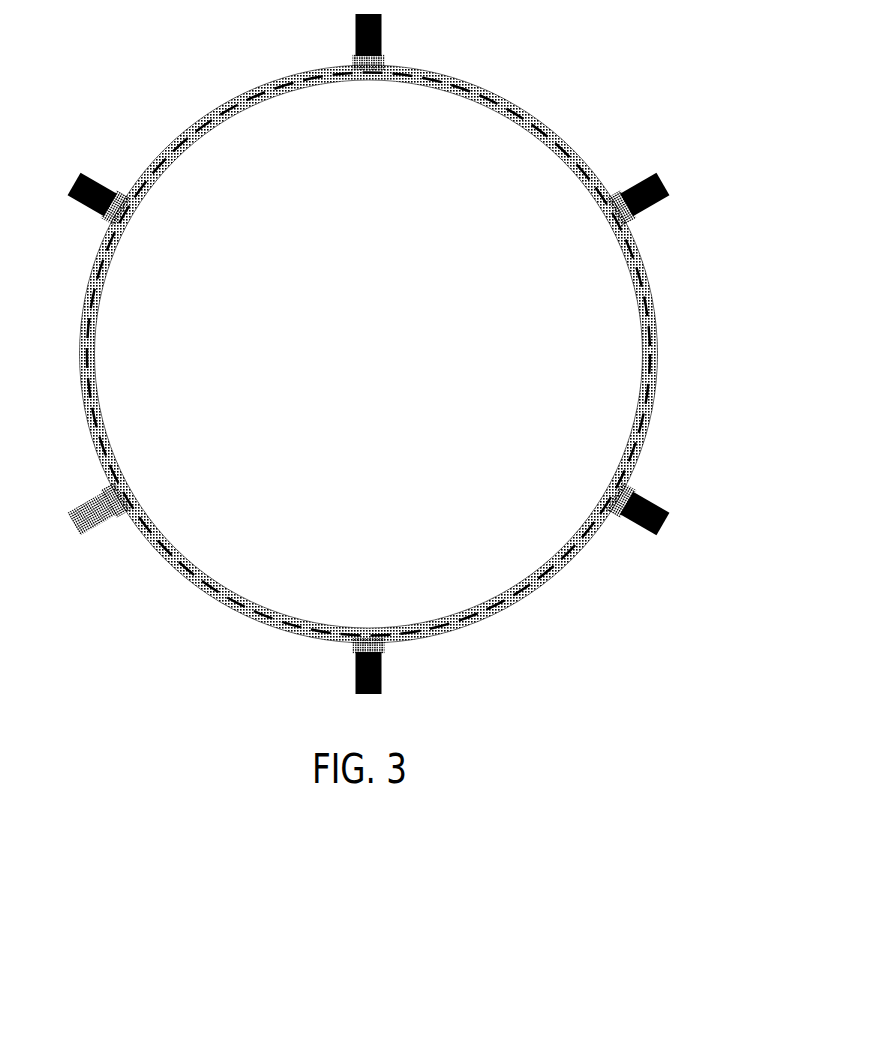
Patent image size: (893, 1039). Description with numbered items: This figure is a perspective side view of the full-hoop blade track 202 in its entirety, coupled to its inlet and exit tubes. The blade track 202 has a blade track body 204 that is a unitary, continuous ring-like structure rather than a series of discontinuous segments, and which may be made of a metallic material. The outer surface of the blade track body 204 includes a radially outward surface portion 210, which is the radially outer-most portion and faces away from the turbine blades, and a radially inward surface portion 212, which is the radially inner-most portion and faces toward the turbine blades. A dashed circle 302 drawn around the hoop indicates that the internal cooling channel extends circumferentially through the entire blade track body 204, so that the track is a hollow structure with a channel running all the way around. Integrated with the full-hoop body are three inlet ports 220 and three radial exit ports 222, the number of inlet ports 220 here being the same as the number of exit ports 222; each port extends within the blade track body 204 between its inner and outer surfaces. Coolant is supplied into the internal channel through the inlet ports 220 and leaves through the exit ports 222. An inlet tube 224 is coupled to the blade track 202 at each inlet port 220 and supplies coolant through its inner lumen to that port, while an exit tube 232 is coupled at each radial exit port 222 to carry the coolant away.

The blade track 202 is at (413, 355).
The blade track body 204 is at (432, 350).
The radially outward surface portion 210 is at (520, 108).
The radially inward surface portion 212 is at (499, 113).
The inlet port 220 is at (377, 66).
The radial exit port 222 is at (118, 203).
The inlet tube 224 is at (382, 38).
The exit tube 232 is at (85, 203).
The dashed circle 302 is at (643, 272).